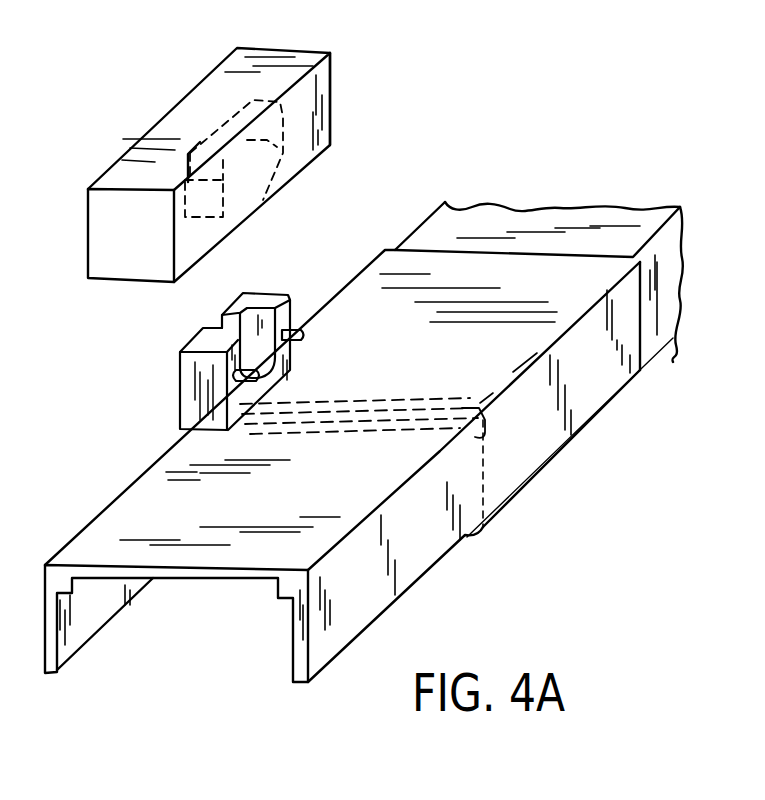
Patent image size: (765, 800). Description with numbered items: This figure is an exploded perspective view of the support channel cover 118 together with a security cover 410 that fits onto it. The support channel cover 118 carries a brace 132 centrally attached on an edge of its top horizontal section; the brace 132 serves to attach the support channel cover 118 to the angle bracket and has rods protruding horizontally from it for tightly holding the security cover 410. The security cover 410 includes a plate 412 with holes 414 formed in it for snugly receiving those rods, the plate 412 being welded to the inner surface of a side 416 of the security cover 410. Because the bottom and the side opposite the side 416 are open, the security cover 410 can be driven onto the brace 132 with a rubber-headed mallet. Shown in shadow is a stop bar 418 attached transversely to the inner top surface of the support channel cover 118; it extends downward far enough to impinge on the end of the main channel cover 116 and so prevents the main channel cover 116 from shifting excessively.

The main channel cover 116 is at (624, 203).
The support channel cover 118 is at (641, 350).
The brace 132 is at (178, 393).
The security cover 410 is at (340, 84).
The plate 412 is at (263, 97).
The holes 414 is at (267, 201).
The side 416 is at (331, 121).
The stop bar 418 is at (354, 438).